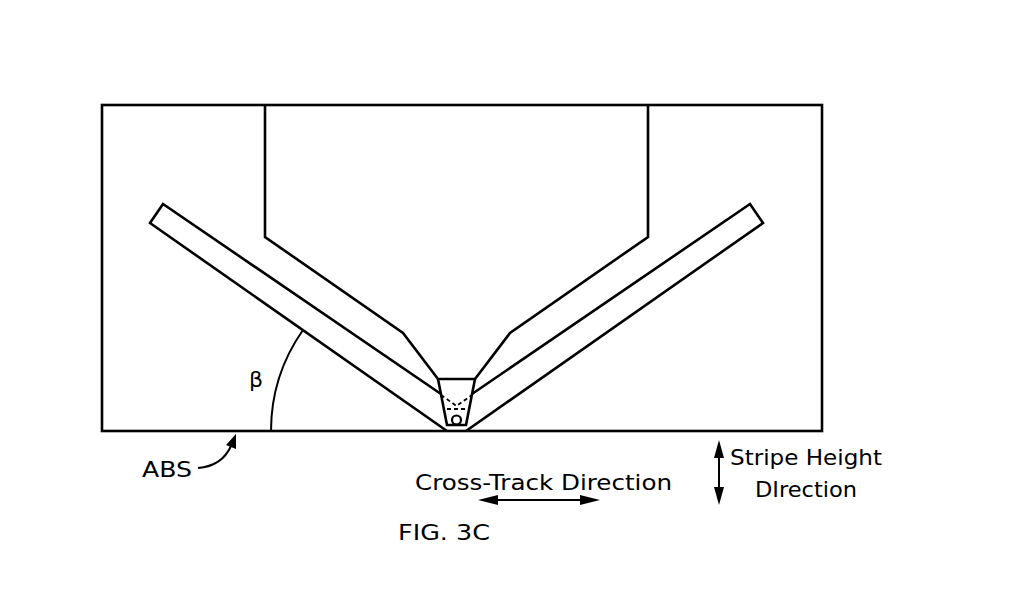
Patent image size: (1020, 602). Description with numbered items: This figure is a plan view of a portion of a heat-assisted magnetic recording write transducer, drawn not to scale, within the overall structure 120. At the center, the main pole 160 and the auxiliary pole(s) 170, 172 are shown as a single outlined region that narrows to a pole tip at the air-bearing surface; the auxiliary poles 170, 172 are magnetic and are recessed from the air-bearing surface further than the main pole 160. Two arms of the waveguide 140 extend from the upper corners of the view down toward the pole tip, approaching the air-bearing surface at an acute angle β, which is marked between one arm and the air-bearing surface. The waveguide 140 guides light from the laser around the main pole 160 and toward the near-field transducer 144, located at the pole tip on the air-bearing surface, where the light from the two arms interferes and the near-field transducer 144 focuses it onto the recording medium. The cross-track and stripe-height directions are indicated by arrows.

The magnetic recording transducer 120 is at (468, 48).
The waveguide 140 is at (156, 230).
The near-field transducer 144 is at (456, 424).
The main pole 160 is at (456, 265).
The auxiliary pole 170 is at (456, 265).
The auxiliary pole 172 is at (456, 265).